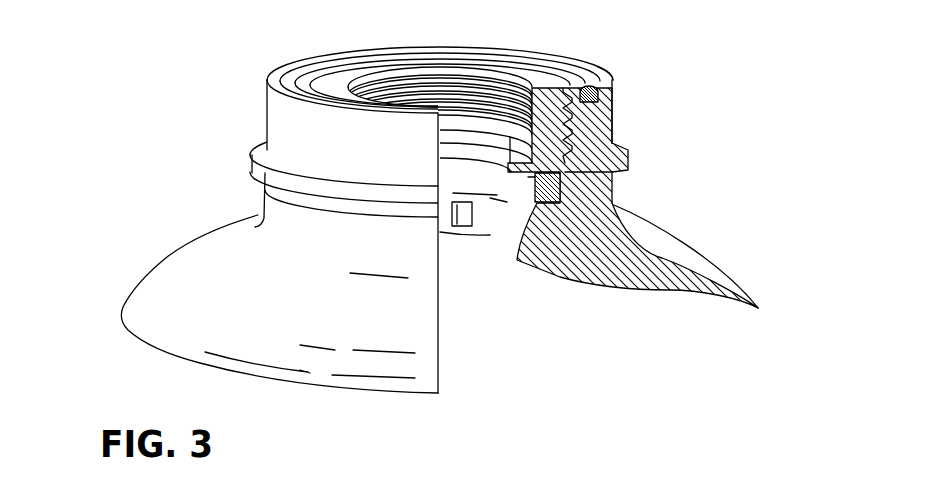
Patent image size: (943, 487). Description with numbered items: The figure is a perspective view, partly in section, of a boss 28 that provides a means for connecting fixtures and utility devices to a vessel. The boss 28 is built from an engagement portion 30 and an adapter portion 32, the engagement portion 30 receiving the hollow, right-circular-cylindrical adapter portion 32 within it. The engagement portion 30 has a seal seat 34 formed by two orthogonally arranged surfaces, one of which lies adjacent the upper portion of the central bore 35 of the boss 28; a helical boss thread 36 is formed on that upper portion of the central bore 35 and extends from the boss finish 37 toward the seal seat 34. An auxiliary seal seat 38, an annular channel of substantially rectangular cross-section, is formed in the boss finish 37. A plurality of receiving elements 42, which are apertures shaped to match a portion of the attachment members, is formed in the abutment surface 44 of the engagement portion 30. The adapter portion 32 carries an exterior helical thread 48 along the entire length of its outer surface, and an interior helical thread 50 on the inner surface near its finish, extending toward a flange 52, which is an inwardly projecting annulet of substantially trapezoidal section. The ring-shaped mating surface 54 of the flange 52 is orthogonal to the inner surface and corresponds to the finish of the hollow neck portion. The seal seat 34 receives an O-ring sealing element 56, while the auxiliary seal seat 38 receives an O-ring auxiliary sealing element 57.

The boss 28 is at (124, 81).
The engagement portion 30 is at (700, 252).
The adapter portion 32 is at (518, 68).
The seal seat 34 is at (614, 202).
The central bore 35 is at (465, 160).
The helical boss thread 36 is at (613, 133).
The boss finish 37 is at (614, 80).
The auxiliary seal seat 38 is at (600, 92).
The receiving elements 42 is at (517, 163).
The abutment surface 44 is at (604, 287).
The exterior helical thread 48 is at (598, 108).
The interior helical thread 50 is at (474, 72).
The flange 52 is at (512, 147).
The mating surface 54 is at (528, 177).
The sealing element 56 is at (598, 178).
The auxiliary sealing element 57 is at (587, 86).